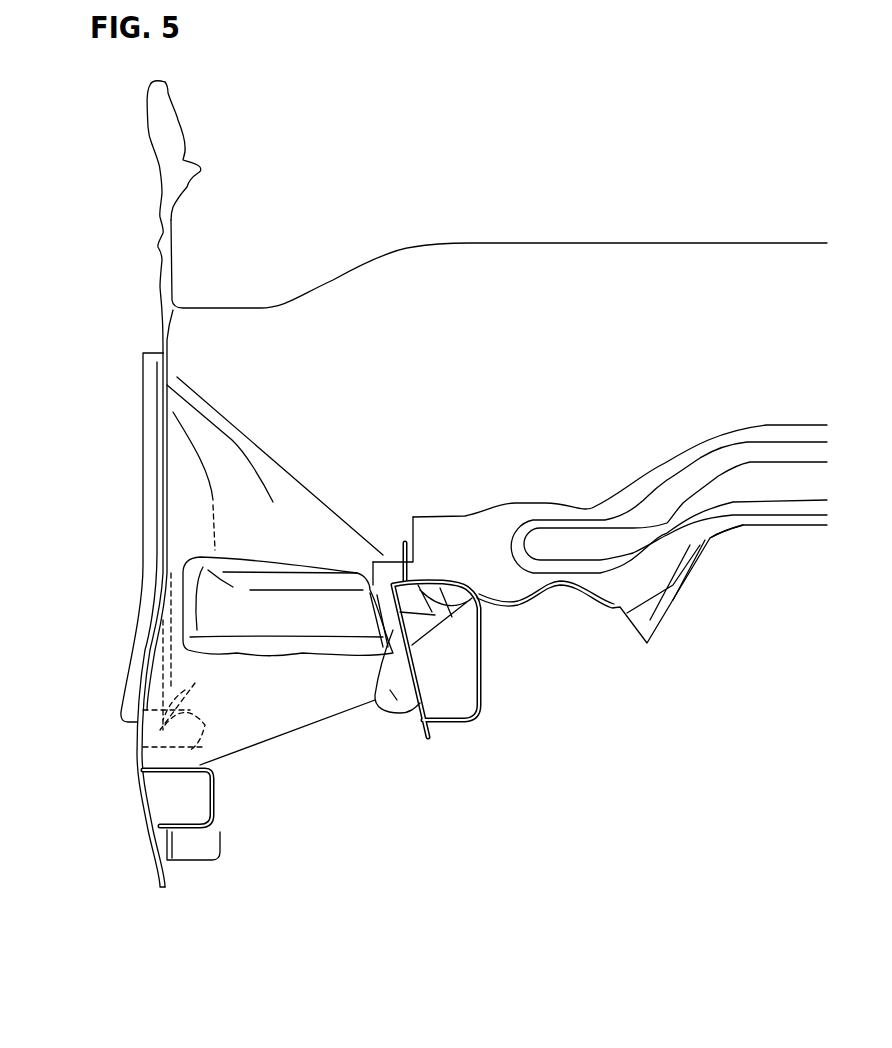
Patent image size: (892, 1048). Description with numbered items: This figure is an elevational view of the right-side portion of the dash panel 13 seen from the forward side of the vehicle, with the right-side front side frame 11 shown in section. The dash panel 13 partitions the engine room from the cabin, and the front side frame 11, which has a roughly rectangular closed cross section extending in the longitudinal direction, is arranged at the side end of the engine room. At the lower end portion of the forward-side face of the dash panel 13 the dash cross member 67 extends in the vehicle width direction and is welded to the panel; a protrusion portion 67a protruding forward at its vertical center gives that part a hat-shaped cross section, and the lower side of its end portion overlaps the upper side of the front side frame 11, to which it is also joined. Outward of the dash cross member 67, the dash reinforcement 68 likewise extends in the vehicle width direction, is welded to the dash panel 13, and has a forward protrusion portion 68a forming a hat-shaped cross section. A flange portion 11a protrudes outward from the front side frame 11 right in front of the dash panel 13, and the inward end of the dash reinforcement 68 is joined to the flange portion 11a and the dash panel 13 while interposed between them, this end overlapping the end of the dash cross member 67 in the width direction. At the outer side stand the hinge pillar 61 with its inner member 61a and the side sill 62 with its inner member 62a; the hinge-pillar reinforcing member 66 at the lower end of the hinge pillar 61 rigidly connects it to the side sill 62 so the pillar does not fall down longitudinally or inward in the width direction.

The front side frame 11 is at (483, 722).
The flange portion 11a is at (395, 686).
The dash panel 13 is at (518, 267).
The hinge pillar 61 is at (122, 484).
The inner member 61a is at (153, 470).
The side sill 62 is at (210, 876).
The inner member 62a is at (187, 833).
The hinge-pillar reinforcing member 66 is at (208, 662).
The dash cross member 67 is at (768, 413).
The protrusion portion 67a is at (778, 488).
The dash reinforcement 68 is at (258, 669).
The protrusion portion 68a is at (302, 620).